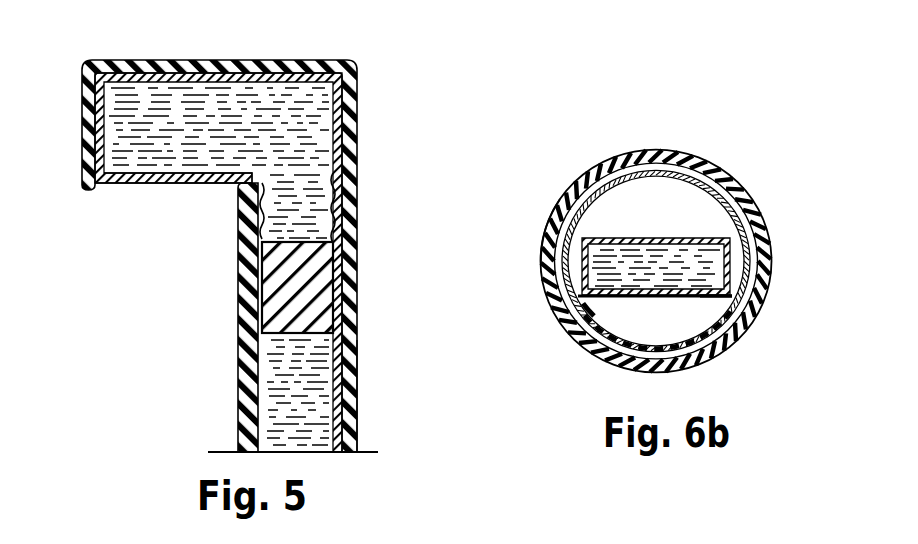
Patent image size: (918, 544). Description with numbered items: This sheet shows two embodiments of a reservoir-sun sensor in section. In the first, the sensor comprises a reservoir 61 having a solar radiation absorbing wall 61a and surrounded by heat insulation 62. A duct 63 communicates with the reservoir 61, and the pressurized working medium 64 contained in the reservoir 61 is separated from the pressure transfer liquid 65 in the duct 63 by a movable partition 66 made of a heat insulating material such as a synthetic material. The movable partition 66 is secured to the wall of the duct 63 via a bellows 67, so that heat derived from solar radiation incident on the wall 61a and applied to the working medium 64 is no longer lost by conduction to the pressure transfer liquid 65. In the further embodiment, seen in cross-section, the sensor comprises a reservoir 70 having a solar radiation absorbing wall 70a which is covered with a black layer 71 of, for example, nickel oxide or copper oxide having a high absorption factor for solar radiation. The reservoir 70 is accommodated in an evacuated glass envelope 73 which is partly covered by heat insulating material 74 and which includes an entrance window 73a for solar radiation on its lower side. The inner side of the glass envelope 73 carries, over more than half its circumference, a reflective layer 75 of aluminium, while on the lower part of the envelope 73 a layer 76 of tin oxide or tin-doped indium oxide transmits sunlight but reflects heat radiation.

In FIG. 5, the reservoir 61 is at (292, 79).
In FIG. 5, the solar radiation absorbing wall 61a is at (153, 182).
In FIG. 5, the heat insulation 62 is at (135, 66).
In FIG. 5, the duct 63 is at (345, 380).
In FIG. 5, the pressurized working medium 64 is at (320, 115).
In FIG. 5, the pressure transfer liquid 65 is at (290, 382).
In FIG. 5, the movable partition 66 is at (280, 280).
In FIG. 5, the bellows 67 is at (330, 212).
In FIG. 6B, the reservoir 70 is at (699, 238).
In FIG. 6B, the solar radiation absorbing wall 70a is at (712, 298).
In FIG. 6B, the black layer 71 is at (689, 298).
In FIG. 6B, the evacuated glass envelope 73 is at (626, 173).
In FIG. 6B, the entrance window 73a is at (592, 320).
In FIG. 6B, the heat insulating material 74 is at (693, 160).
In FIG. 6B, the reflective layer 75 is at (572, 197).
In FIG. 6B, the heat radiation reflecting layer 76 is at (642, 350).